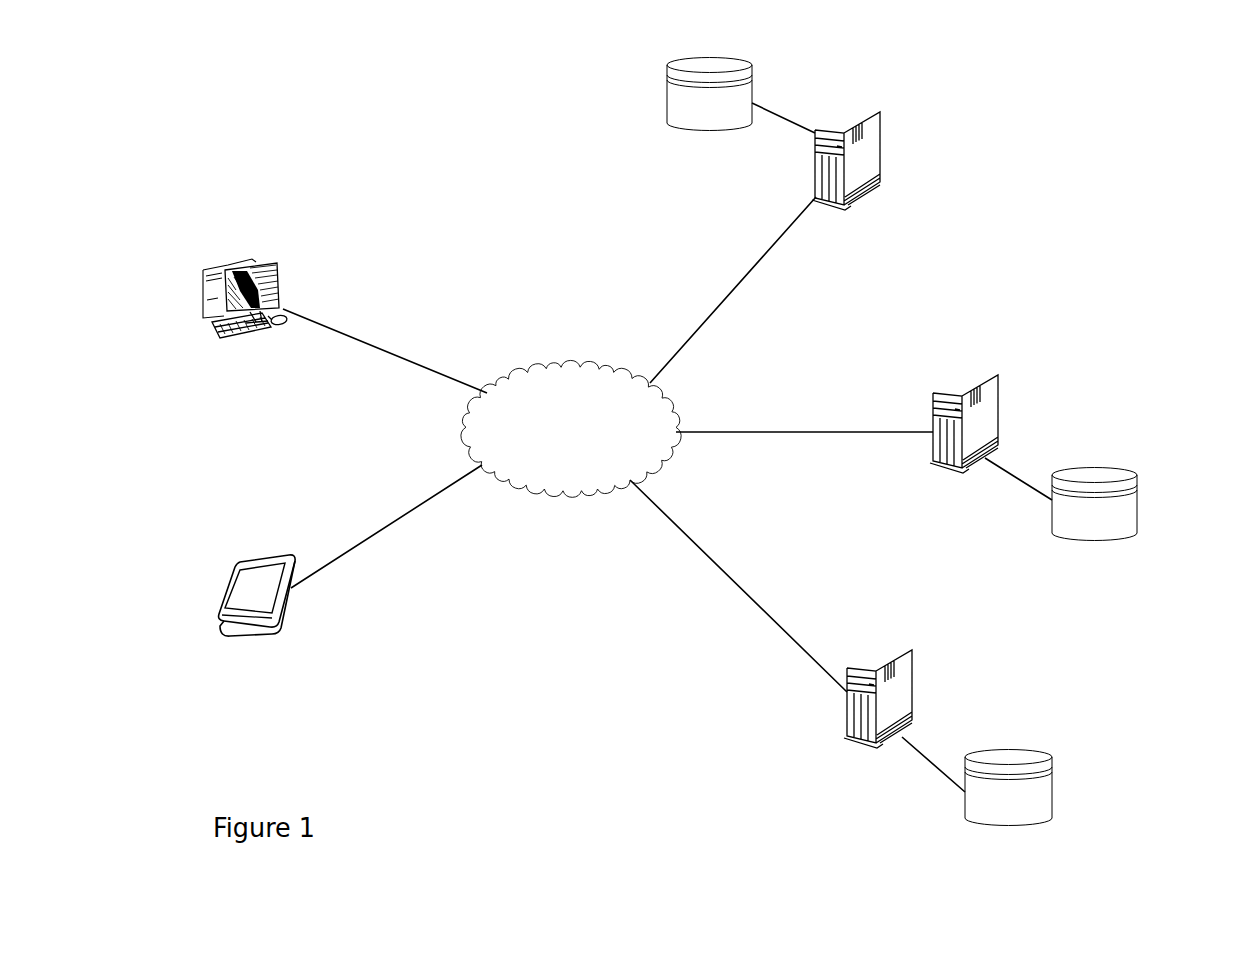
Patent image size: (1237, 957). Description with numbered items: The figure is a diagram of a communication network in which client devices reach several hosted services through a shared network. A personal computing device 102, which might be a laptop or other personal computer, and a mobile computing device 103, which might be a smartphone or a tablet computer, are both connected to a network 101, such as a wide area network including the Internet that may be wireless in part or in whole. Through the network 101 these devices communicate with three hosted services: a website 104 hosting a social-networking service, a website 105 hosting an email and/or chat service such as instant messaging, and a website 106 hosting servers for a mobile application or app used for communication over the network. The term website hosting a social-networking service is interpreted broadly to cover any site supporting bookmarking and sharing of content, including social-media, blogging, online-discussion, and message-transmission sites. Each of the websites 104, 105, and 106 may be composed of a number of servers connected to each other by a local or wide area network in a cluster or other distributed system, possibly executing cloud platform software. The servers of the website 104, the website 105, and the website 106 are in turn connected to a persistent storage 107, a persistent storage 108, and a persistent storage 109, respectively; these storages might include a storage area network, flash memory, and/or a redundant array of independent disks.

The network 101 is at (557, 434).
The personal computing device 102 is at (218, 389).
The mobile computing device 103 is at (243, 667).
The website hosting a social-networking service 104 is at (989, 190).
The website hosting an email and/or chat service 105 is at (1113, 386).
The website hosting servers for a mobile application 106 is at (669, 700).
The persistent storage 107 is at (695, 166).
The persistent storage 108 is at (1086, 575).
The persistent storage 109 is at (1001, 859).